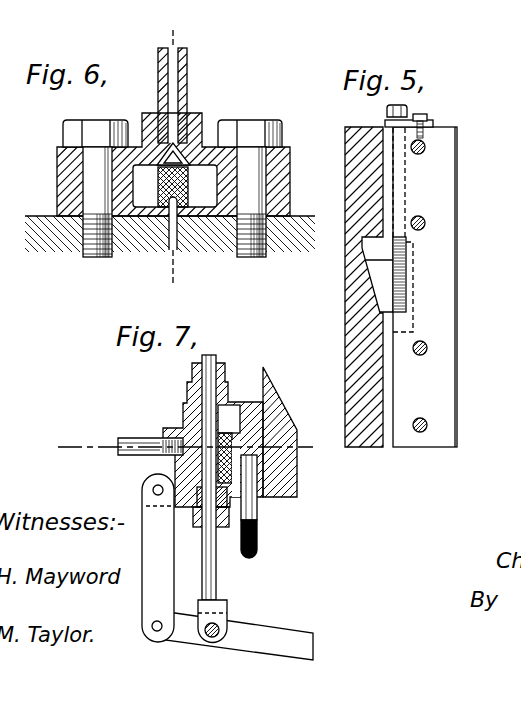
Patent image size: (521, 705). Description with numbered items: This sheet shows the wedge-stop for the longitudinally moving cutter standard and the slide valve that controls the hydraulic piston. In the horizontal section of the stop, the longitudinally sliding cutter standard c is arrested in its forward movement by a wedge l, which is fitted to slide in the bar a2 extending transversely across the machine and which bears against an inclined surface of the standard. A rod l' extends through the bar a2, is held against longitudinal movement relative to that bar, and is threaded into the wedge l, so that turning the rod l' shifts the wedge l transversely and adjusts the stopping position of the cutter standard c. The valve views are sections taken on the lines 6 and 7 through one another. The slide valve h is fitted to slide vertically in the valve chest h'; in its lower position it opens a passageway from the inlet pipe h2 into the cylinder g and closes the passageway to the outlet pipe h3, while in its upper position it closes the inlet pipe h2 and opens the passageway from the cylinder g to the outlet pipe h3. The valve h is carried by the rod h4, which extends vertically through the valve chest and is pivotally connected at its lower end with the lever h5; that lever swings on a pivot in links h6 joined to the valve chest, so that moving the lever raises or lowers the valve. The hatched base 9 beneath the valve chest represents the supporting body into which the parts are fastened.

In FIG. 6, the valve chest h' is at (161, 185).
In FIG. 7, the valve chest h' is at (190, 477).
In FIG. 6, the inlet pipe h2 is at (185, 95).
In FIG. 7, the inlet pipe h2 is at (143, 434).
In FIG. 6, the slide valve h is at (175, 186).
In FIG. 7, the slide valve h is at (238, 404).
In FIG. 6, the rod h4 is at (162, 208).
In FIG. 7, the rod h4 is at (217, 578).
In FIG. 6, the base 9 is at (170, 248).
In FIG. 6, the section line 7- 7 is at (173, 157).
In FIG. 5, the longitudinally sliding cutter standard c is at (360, 287).
In FIG. 5, the wedge l is at (361, 286).
In FIG. 5, the rod l' is at (412, 218).
In FIG. 5, the bar a2 is at (447, 300).
In FIG. 7, the cylinder g is at (283, 432).
In FIG. 7, the outlet pipe h3 is at (258, 530).
In FIG. 7, the lever h5 is at (264, 632).
In FIG. 7, the links h6 is at (158, 558).
In FIG. 7, the section line 6- 6 is at (184, 449).